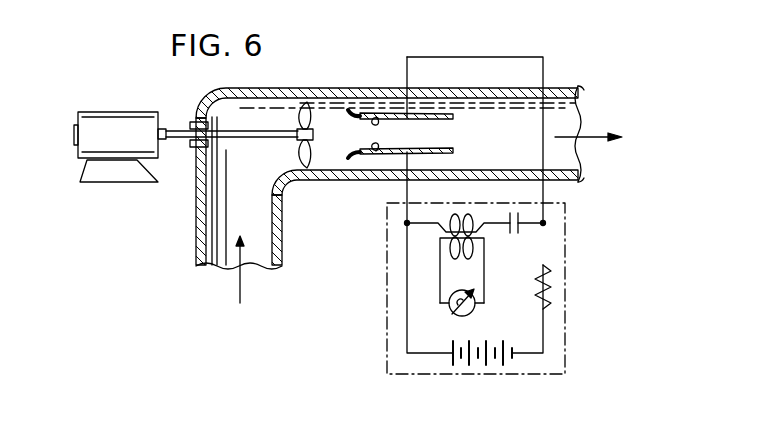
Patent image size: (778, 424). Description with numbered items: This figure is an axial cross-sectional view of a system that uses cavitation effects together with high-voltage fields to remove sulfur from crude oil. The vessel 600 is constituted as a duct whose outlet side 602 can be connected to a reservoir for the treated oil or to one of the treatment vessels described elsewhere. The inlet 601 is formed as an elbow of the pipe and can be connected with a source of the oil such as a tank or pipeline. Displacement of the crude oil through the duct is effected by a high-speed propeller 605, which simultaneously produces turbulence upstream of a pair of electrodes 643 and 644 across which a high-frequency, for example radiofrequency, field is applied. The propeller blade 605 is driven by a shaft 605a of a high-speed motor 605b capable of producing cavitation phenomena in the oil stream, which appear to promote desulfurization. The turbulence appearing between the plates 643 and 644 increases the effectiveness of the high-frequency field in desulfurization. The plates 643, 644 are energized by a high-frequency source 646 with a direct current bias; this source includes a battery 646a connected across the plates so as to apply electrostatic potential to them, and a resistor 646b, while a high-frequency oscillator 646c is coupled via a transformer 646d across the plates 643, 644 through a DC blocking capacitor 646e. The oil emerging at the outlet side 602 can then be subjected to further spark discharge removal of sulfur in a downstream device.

The vessel 600 is at (580, 88).
The outlet side 602 is at (580, 165).
The inlet 601 is at (214, 262).
The propeller 605 is at (311, 101).
The shaft 605a is at (250, 138).
The high-speed motor 605b is at (78, 160).
The electrode 643 is at (380, 115).
The electrode 644 is at (368, 154).
The high-frequency source 646 is at (478, 232).
The battery 646a is at (465, 360).
The resistor 646b is at (551, 288).
The high-frequency oscillator 646c is at (450, 315).
The transformer 646d is at (438, 237).
The DC blocking capacitor 646e is at (545, 225).